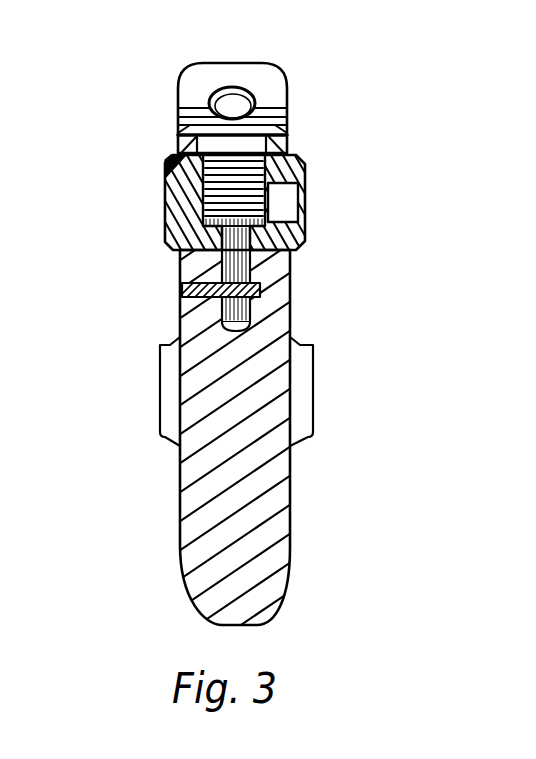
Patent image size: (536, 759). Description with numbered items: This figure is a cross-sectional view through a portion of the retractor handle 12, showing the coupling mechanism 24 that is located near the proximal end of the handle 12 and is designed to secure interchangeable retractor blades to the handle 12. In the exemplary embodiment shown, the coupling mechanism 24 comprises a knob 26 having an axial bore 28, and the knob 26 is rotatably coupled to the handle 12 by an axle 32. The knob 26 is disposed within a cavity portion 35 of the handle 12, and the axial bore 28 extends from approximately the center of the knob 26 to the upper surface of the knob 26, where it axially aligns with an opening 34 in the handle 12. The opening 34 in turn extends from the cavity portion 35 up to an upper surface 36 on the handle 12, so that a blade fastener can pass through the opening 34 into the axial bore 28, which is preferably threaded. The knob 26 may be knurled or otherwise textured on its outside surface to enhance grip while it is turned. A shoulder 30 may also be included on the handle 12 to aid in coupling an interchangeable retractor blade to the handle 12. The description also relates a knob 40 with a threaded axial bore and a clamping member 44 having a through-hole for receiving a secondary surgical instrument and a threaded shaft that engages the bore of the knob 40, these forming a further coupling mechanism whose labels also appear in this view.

The handle 12 is at (180, 480).
The coupling mechanism 24 is at (315, 154).
The knob 26 is at (165, 180).
The axial bore 28 is at (293, 180).
The shoulder 30 is at (175, 127).
The axle 32 is at (258, 322).
The opening 34 is at (273, 140).
The cavity portion 35 is at (170, 162).
The upper surface 36 is at (270, 148).
The knob 40 is at (315, 380).
The clamping member 44 is at (206, 65).